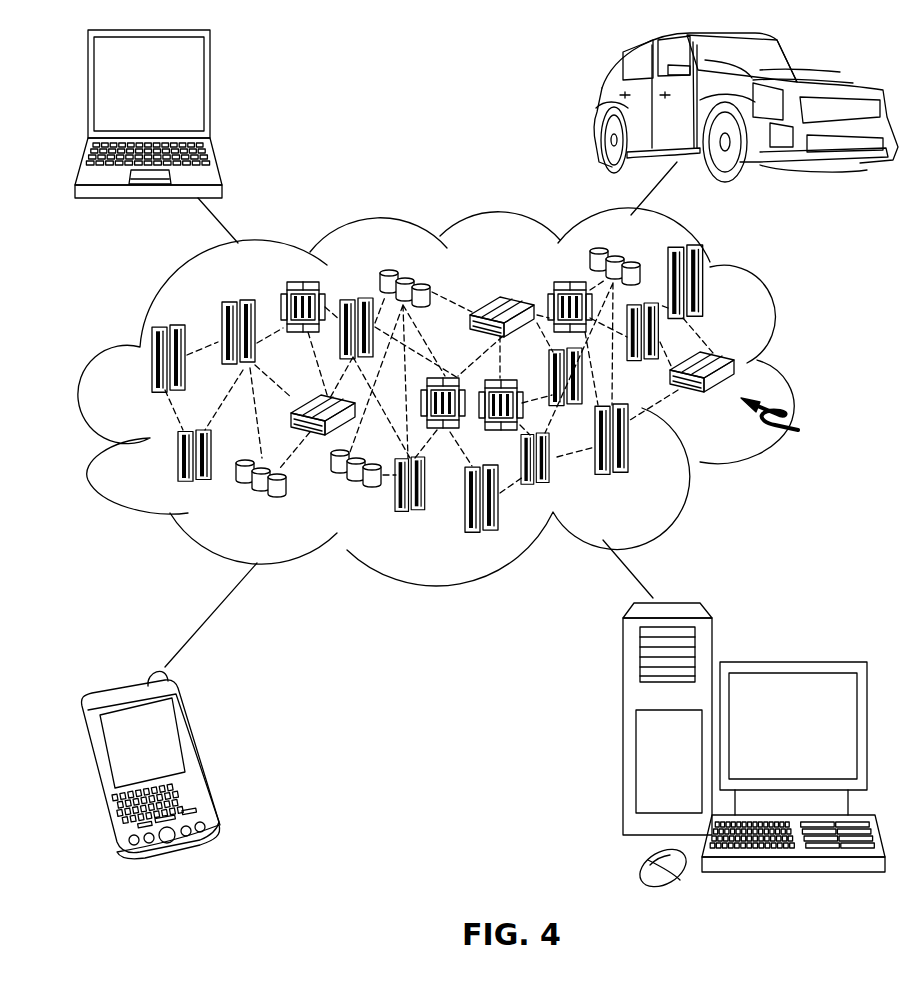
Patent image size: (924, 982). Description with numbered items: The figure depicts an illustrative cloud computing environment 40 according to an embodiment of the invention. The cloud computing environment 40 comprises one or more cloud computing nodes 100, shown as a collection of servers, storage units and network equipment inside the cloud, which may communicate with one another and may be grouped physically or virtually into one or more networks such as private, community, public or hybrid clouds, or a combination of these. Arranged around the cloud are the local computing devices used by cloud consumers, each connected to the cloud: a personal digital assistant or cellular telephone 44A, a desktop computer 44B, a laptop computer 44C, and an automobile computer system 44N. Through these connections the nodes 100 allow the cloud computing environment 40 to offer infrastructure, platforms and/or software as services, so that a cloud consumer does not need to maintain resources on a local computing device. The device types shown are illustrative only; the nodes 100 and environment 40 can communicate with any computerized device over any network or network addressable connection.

The cloud computing environment 40 is at (795, 371).
The cloud computing nodes 100 is at (796, 421).
The personal digital assistant (PDA) or cellular telephone 44A is at (200, 756).
The desktop computer 44B is at (790, 662).
The laptop computer 44C is at (210, 90).
The automobile computer system 44N is at (596, 110).